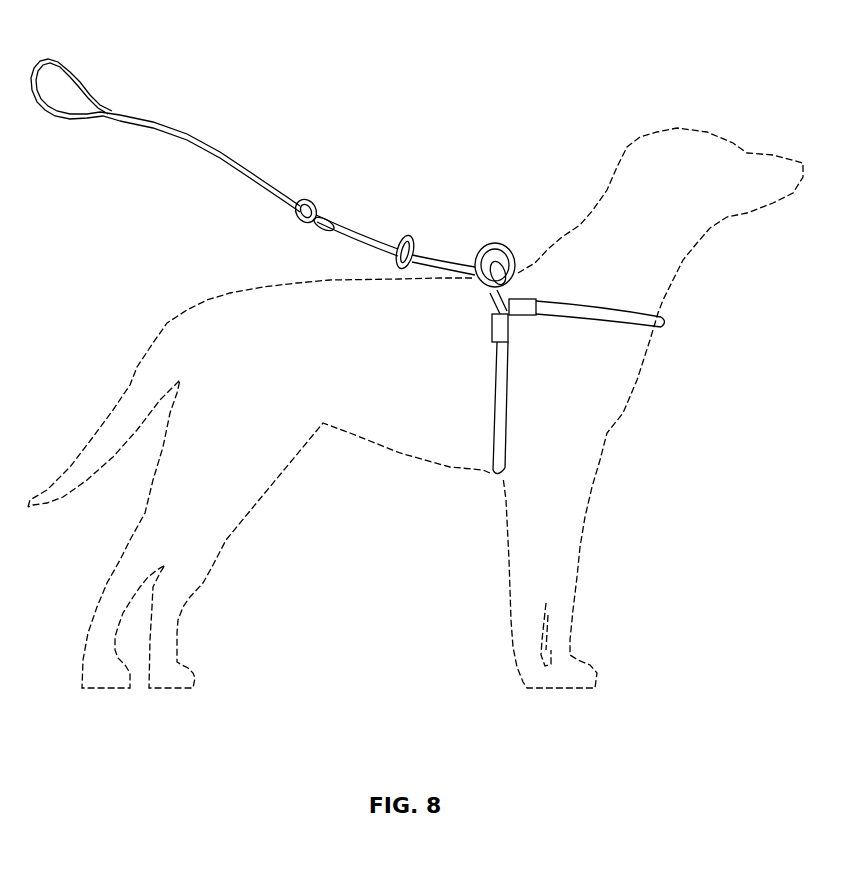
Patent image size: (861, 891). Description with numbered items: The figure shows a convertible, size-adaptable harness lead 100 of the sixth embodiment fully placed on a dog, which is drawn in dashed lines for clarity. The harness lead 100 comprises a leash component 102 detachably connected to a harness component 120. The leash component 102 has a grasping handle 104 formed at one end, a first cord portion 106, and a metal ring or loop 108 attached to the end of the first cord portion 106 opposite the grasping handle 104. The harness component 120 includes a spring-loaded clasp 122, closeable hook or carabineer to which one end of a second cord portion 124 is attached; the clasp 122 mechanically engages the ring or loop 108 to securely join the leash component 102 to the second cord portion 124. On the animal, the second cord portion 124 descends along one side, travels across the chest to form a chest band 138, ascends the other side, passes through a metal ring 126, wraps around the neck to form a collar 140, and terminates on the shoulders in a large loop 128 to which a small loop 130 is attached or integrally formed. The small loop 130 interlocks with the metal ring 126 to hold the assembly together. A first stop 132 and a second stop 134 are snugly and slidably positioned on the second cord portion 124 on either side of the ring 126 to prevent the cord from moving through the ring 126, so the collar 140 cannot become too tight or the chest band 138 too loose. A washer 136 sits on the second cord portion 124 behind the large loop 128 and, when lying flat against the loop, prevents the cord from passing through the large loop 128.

The harness lead 100 is at (352, 98).
The leash component 102 is at (175, 118).
The grasping handle 104 is at (75, 75).
The first cord portion 106 is at (203, 140).
The metal ring or loop 108 is at (307, 197).
The spring-loaded clasp 122 is at (320, 234).
The harness component 120 is at (469, 197).
The second cord portion 124 is at (390, 240).
The washer 136 is at (404, 234).
The large loop 128 is at (505, 242).
The metal ring 126 is at (520, 270).
The small loop 130 is at (488, 302).
The first stop 132 is at (528, 322).
The second stop 134 is at (492, 330).
The chest band 138 is at (500, 478).
The collar 140 is at (666, 322).